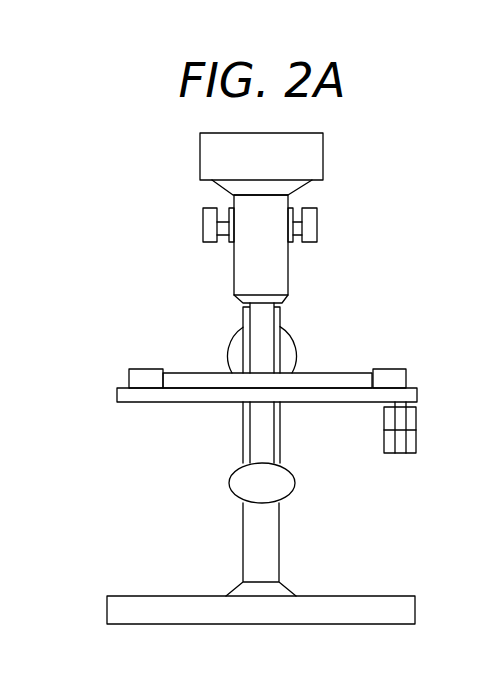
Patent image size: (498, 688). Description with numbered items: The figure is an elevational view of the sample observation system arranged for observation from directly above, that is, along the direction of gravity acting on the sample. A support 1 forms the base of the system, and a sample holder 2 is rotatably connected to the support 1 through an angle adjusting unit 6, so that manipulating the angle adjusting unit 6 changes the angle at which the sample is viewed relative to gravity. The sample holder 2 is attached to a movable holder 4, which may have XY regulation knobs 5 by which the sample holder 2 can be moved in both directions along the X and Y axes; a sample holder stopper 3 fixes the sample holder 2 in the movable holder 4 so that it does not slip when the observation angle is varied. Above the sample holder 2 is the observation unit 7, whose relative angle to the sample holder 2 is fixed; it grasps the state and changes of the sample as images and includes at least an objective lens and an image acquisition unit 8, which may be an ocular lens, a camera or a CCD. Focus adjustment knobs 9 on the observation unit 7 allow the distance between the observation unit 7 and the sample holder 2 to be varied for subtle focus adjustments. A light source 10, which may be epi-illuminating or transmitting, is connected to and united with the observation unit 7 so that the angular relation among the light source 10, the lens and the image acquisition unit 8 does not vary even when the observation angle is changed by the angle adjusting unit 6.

The support 1 is at (270, 540).
The sample holder 2 is at (190, 378).
The sample holder stopper 3 is at (388, 375).
The movable holder 4 is at (417, 396).
The XY regulation knobs 5 is at (412, 440).
The angle adjusting unit 6 is at (288, 347).
The observation unit 7 is at (280, 270).
The image acquisition unit 8 is at (311, 157).
The focus adjustment knobs 9 is at (317, 216).
The light source 10 is at (233, 483).